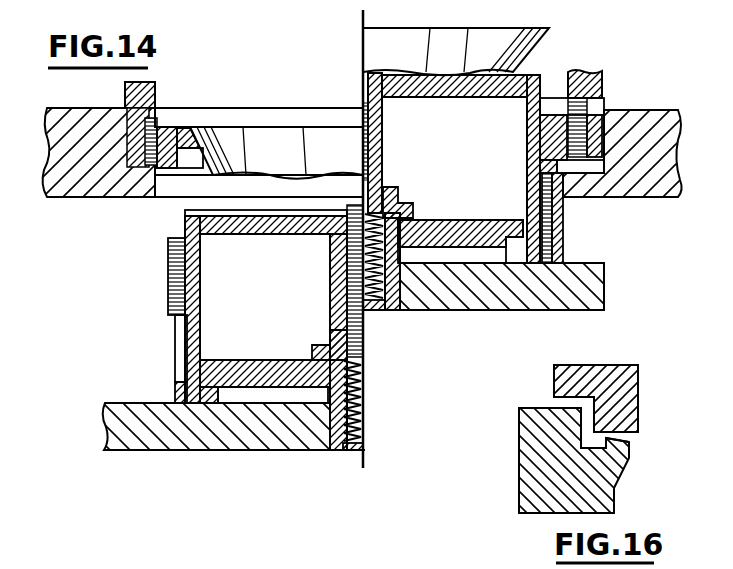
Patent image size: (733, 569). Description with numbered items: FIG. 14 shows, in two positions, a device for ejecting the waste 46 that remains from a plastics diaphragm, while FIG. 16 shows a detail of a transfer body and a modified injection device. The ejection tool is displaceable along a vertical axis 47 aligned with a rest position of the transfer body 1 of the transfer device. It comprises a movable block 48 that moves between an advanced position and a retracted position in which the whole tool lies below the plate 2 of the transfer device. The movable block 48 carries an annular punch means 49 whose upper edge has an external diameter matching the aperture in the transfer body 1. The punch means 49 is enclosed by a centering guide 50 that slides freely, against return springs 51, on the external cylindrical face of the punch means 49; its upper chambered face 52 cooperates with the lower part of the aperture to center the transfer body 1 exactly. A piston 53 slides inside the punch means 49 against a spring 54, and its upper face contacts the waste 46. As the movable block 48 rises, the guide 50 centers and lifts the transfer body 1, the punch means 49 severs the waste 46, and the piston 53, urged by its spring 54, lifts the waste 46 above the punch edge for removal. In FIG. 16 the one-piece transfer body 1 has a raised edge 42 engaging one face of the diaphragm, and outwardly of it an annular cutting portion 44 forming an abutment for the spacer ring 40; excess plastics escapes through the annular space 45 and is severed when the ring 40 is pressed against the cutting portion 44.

In FIG. 14, the transfer body 1 is at (600, 113).
In FIG. 16, the transfer body 1 is at (608, 495).
In FIG. 14, the plate 2 is at (653, 182).
In FIG. 16, the spacer ring 40 is at (629, 395).
In FIG. 16, the raised edge 42 is at (628, 447).
In FIG. 16, the annular cutting portion 44 is at (614, 430).
In FIG. 16, the annular space 45 is at (569, 402).
In FIG. 14, the waste 46 is at (369, 103).
In FIG. 14, the vertical axis 47 is at (366, 22).
In FIG. 14, the movable block 48 is at (222, 430).
In FIG. 14, the annular punch means 49 is at (200, 283).
In FIG. 14, the centering guide 50 is at (168, 250).
In FIG. 14, the return springs 51 is at (175, 335).
In FIG. 14, the upper chambered face 52 is at (183, 214).
In FIG. 14, the piston 53 is at (283, 233).
In FIG. 14, the spring 54 is at (371, 311).